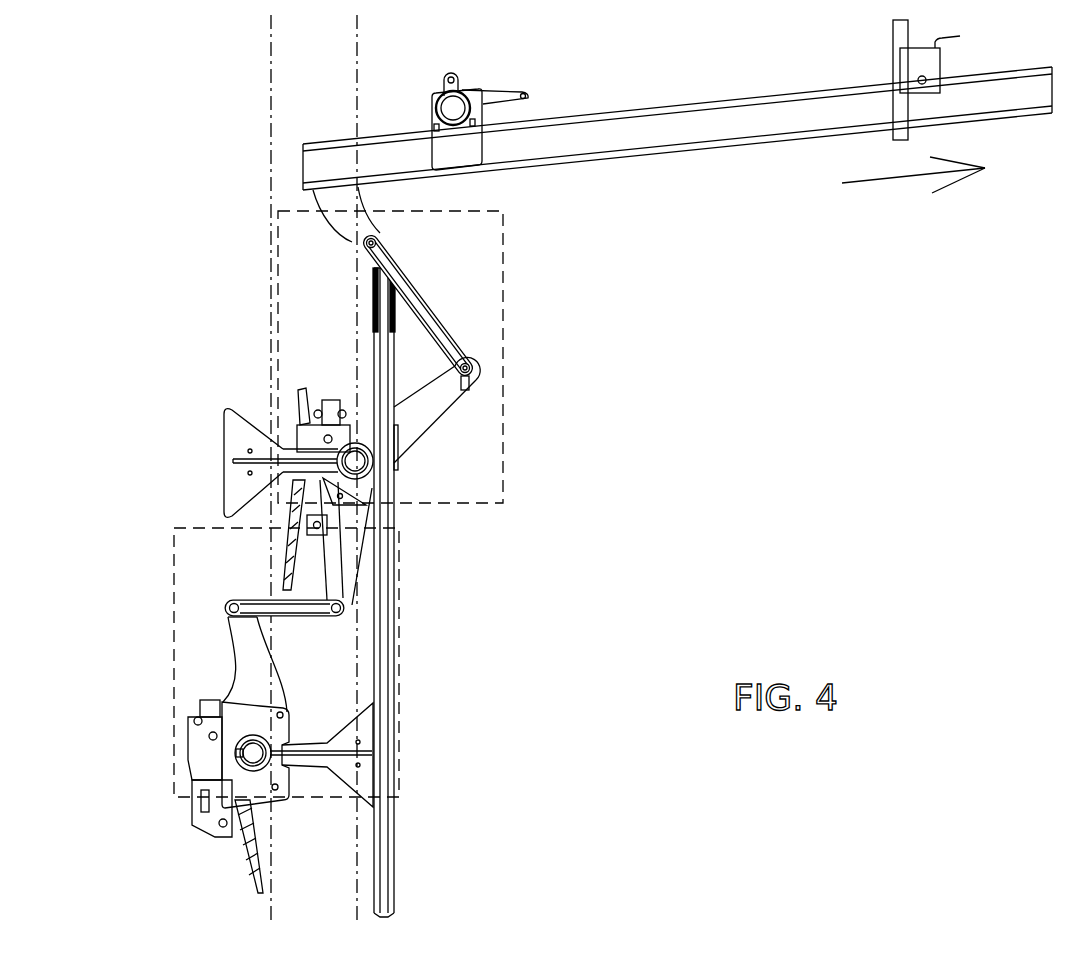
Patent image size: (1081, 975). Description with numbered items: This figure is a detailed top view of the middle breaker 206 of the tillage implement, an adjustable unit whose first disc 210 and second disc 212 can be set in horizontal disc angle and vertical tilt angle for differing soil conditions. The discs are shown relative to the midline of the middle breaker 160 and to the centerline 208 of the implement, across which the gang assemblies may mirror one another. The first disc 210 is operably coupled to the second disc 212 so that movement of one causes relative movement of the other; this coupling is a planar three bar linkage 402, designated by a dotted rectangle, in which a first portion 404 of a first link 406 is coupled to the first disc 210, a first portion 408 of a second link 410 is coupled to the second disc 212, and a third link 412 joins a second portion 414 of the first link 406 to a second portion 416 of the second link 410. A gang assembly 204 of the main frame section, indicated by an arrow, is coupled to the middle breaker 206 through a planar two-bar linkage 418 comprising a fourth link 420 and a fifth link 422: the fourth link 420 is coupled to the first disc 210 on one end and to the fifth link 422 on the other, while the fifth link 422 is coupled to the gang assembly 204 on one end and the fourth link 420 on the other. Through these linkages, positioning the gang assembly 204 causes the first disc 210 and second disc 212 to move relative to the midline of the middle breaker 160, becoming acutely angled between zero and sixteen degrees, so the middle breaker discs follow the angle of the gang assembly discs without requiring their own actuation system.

The midline of the middle breaker 160 is at (270, 63).
The gang assembly 204 is at (904, 182).
The middle breaker 206 is at (672, 33).
The centerline 208 is at (358, 63).
The first disc 210 is at (303, 400).
The second disc 212 is at (246, 872).
The three bar linkage 402 is at (408, 590).
The first portion of the first link 404 is at (356, 512).
The first link 406 is at (350, 555).
The first portion of the second link 408 is at (250, 704).
The second link 410 is at (243, 655).
The third link 412 is at (305, 625).
The second portion of the first link 414 is at (345, 590).
The second portion of the second link 416 is at (232, 628).
The two-bar linkage 418 is at (505, 282).
The fourth link 420 is at (425, 412).
The fifth link 422 is at (430, 322).